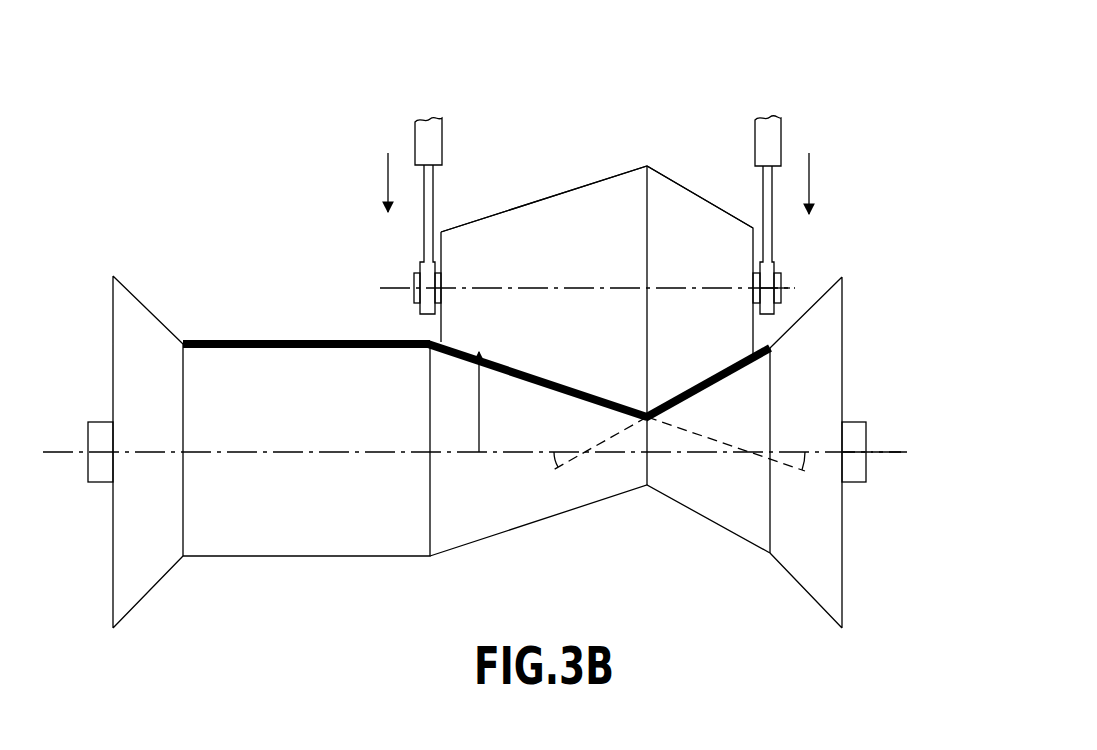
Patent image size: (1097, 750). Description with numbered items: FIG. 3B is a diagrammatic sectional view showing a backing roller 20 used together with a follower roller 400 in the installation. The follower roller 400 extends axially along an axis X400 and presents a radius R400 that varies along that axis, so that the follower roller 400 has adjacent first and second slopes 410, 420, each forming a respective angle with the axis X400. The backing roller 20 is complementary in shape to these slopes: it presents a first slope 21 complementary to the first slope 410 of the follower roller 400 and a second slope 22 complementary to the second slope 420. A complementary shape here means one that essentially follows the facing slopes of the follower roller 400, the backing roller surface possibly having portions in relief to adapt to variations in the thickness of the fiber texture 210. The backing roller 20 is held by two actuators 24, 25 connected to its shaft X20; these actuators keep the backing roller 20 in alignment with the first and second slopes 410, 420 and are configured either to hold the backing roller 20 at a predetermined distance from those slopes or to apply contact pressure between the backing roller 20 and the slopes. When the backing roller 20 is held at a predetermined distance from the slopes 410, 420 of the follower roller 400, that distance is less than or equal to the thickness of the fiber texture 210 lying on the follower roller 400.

The backing roller 20 is at (606, 150).
The first slope 21 is at (545, 196).
The second slope 22 is at (698, 196).
The actuator 24 is at (433, 137).
The actuator 25 is at (758, 128).
The shaft X20 is at (788, 287).
The fiber texture 210 is at (268, 338).
The follower roller 400 is at (314, 583).
The first slope 410 is at (526, 380).
The second slope 420 is at (728, 378).
The axis X400 is at (892, 451).
The radius R400 is at (478, 411).